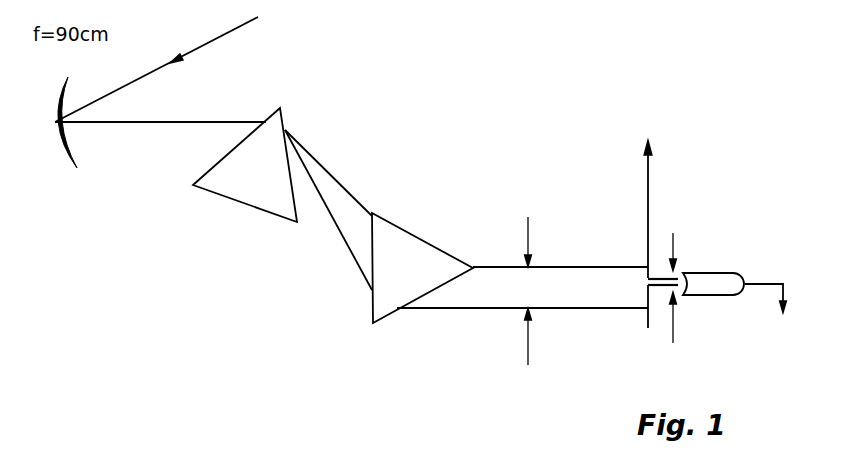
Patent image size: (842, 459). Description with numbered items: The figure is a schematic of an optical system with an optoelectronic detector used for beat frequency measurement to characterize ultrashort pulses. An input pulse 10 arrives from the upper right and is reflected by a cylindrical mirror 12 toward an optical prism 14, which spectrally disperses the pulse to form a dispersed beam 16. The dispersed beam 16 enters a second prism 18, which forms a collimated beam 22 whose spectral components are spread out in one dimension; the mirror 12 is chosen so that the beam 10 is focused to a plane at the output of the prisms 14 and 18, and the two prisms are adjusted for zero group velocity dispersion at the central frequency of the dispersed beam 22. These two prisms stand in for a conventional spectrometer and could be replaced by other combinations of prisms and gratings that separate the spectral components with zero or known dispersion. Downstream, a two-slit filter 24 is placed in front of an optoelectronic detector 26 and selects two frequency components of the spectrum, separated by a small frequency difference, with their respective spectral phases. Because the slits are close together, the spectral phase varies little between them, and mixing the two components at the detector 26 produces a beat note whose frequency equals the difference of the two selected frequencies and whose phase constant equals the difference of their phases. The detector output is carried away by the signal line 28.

The input pulse 10 is at (203, 50).
The cylindrical mirror 12 is at (62, 160).
The optical prism 14 is at (255, 192).
The dispersed beam 16 is at (332, 172).
The prism 18 is at (400, 298).
The collimated beam 22 is at (497, 293).
The two-slit filter 24 is at (650, 202).
The optoelectronic detector 26 is at (728, 296).
The output signal 28 is at (771, 314).